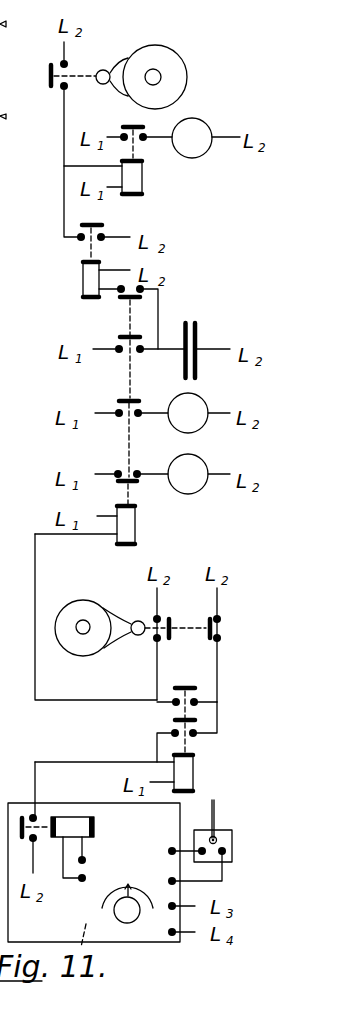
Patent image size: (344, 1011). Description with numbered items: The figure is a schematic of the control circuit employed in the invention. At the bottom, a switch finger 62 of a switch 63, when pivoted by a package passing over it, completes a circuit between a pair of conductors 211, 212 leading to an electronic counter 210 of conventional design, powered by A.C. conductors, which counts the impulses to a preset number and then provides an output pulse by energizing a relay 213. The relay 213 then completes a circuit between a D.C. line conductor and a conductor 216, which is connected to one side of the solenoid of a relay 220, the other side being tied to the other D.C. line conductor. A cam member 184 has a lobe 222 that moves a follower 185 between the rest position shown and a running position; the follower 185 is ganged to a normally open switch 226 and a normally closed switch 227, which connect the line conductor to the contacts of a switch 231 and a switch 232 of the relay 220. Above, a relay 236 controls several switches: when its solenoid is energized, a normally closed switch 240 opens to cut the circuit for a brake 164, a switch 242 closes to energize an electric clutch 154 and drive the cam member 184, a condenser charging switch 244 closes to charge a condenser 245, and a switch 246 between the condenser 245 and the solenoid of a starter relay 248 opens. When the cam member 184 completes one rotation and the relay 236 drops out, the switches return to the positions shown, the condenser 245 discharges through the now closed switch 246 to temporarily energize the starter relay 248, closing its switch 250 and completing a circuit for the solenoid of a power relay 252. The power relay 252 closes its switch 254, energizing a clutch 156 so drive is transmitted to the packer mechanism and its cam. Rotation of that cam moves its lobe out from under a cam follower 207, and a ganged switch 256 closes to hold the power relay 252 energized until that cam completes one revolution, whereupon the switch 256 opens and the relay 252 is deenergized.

The switch 256 is at (48, 68).
The cam follower 207 is at (114, 58).
The switch 254 is at (130, 128).
The clutch 156 is at (210, 128).
The power relay 252 is at (145, 188).
The switch 250 is at (103, 222).
The starter relay 248 is at (82, 281).
The switch 246 is at (140, 301).
The condenser charging switch 244 is at (120, 337).
The condenser 245 is at (198, 341).
The switch 242 is at (119, 399).
The electric clutch 154 is at (202, 428).
The normally closed switch 240 is at (136, 487).
The brake 164 is at (203, 491).
The relay 236 is at (137, 534).
The cam member 184 is at (89, 653).
The follower 185 is at (139, 636).
The lobe 222 is at (125, 624).
The normally open switch 226 is at (183, 612).
The normally closed switch 227 is at (219, 629).
The switch 231 is at (190, 680).
The switch 232 is at (175, 720).
The conductor 216 is at (110, 754).
The relay 220 is at (195, 771).
The electronic counter 210 is at (144, 936).
The relay 213 is at (95, 832).
The switch finger 62 is at (216, 809).
The switch 63 is at (233, 839).
The conductor 211 is at (188, 853).
The conductor 212 is at (224, 873).